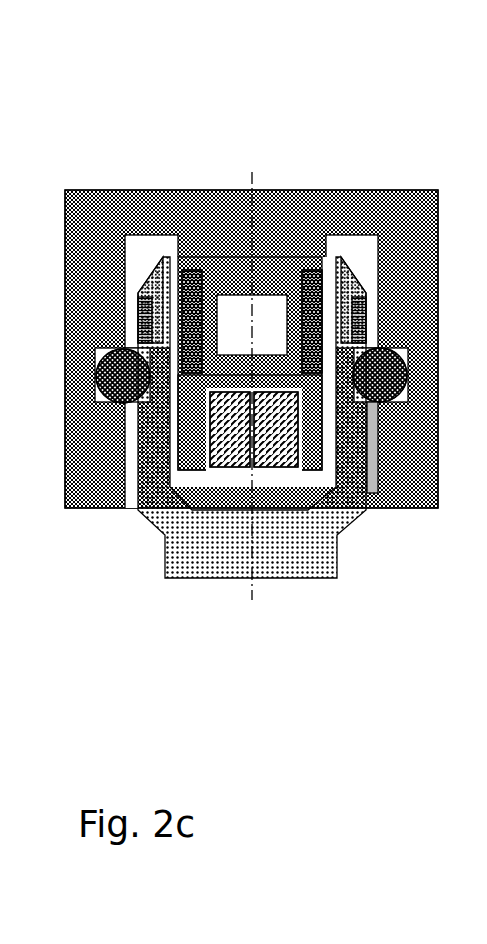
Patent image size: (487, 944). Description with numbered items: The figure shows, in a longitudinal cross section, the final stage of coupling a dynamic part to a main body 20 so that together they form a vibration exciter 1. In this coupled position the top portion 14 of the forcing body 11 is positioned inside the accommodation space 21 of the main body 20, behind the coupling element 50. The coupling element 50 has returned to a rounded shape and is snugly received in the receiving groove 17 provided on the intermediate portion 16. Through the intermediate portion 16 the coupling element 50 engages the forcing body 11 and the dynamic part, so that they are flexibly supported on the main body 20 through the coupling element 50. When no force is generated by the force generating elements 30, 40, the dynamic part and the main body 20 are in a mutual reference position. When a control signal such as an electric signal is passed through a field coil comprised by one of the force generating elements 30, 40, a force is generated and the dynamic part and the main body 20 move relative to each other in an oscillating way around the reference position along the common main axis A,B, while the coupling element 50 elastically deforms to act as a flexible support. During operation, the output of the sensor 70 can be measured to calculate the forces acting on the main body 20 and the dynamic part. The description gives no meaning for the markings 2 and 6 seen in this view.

The vibration exciter 1 is at (283, 112).
The valve assembly 2 is at (0, 165).
The flow direction 6 is at (382, 602).
The forcing body 11 is at (183, 550).
The top portion 14 is at (100, 240).
The intermediate portion 16 is at (85, 512).
The receiving groove 17 is at (408, 380).
The main body 20 is at (421, 140).
The accommodation space 21 is at (372, 490).
The force generating element 30 is at (160, 258).
The force generating element 40 is at (200, 300).
The coupling element 50 is at (95, 378).
The sensor 70 is at (268, 290).
The common main axis A,B is at (250, 542).